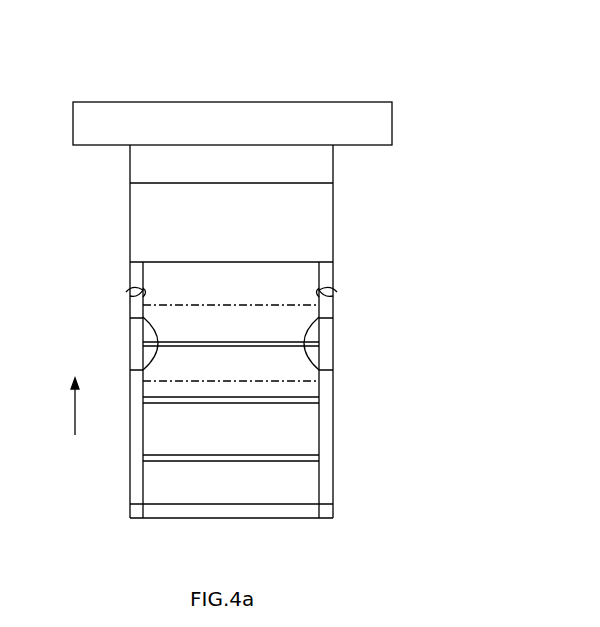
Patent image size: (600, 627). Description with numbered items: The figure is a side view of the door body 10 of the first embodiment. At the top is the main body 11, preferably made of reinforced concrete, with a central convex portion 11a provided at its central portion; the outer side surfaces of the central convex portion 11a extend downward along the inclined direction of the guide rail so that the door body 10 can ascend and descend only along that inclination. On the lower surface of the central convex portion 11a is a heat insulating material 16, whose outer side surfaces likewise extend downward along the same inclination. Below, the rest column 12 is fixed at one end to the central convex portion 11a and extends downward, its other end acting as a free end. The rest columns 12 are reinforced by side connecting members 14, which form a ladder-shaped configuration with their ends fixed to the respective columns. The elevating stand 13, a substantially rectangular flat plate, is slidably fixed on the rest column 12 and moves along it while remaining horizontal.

The door body 10 is at (410, 78).
The main body 11 is at (237, 117).
The central convex portion 11a is at (322, 168).
The heat insulating material 16 is at (335, 225).
The rest column 12 is at (335, 430).
The side connecting member 14 is at (210, 454).
The elevating stand 13 is at (277, 523).